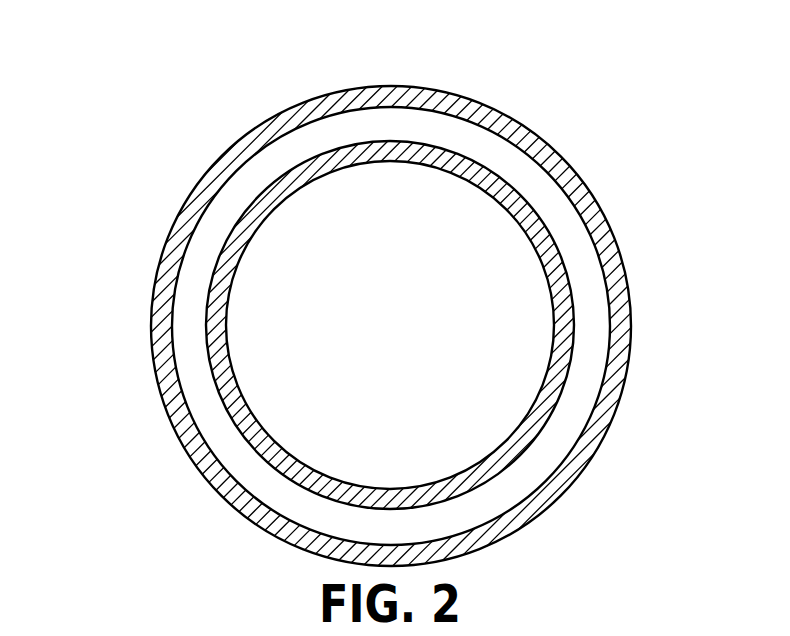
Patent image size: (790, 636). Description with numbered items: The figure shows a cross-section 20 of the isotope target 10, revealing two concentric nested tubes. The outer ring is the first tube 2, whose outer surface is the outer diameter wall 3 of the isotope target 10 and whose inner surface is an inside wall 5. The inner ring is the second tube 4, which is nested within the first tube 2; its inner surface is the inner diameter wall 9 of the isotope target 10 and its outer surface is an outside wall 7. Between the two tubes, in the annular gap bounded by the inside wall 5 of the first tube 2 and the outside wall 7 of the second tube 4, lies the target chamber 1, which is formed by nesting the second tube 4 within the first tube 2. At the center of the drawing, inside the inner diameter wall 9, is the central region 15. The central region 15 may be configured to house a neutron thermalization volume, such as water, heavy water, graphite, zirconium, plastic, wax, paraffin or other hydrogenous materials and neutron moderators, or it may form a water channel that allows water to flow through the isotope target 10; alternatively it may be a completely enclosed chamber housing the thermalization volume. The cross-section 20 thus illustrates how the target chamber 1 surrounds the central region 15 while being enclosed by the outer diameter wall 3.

The target chamber 1 is at (187, 304).
The first tube 2 is at (382, 100).
The outer diameter wall 3 is at (343, 90).
The second tube 4 is at (383, 500).
The inside wall 5 is at (473, 119).
The outside wall 7 is at (410, 509).
The inner diameter wall 9 is at (290, 455).
The isotope target 10 is at (588, 166).
The central region 15 is at (403, 328).
The cross-section 20 is at (194, 166).